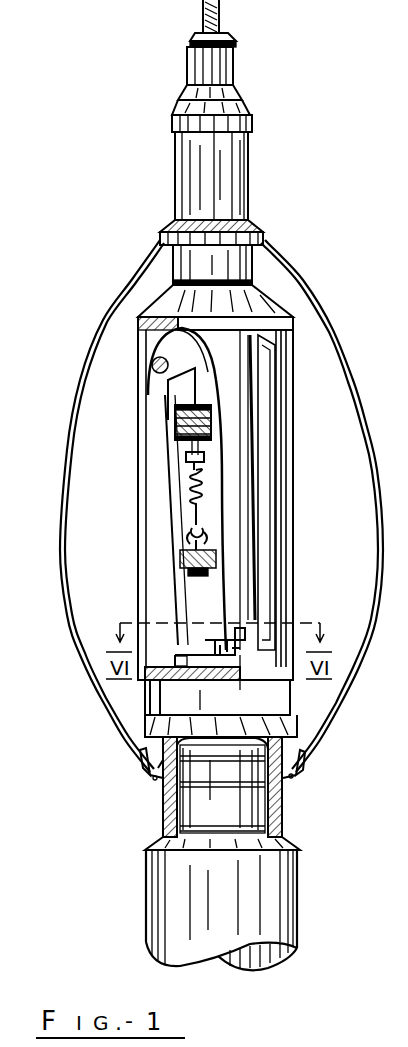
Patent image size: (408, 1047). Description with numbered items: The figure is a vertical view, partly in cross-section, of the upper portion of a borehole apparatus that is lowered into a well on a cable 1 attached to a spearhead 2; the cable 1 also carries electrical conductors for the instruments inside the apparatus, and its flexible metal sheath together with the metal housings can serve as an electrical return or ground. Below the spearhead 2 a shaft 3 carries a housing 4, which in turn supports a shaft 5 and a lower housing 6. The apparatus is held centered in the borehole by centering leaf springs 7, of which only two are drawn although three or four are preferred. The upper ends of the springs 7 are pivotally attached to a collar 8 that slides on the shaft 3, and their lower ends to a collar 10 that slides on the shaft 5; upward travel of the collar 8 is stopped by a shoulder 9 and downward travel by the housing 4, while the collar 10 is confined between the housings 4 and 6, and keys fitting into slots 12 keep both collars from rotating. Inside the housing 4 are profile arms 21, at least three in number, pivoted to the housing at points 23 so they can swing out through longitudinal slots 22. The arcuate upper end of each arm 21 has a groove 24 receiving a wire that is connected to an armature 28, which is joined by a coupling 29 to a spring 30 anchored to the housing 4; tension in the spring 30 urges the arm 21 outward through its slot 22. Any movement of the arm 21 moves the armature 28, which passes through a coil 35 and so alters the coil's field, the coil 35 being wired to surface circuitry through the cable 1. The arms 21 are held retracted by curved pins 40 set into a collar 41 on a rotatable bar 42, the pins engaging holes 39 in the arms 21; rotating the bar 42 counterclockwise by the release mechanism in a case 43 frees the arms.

The cable 1 is at (222, 8).
The spearhead 2 is at (187, 70).
The shaft 3 is at (250, 172).
The housing 4 is at (287, 346).
The shaft 5 is at (284, 820).
The housing 6 is at (298, 903).
The centering leaf springs 7 is at (73, 410).
The collar 8 is at (252, 268).
The shoulder 9 is at (253, 124).
The collar 10 is at (306, 757).
The slots 12 is at (212, 182).
The profile arms 21 is at (165, 585).
The longitudinal slots 22 is at (265, 537).
The pivot points 23 is at (152, 365).
The groove 24 is at (168, 388).
The armature 28 is at (186, 455).
The coupling 29 is at (188, 478).
The spring 30 is at (186, 508).
The coil 35 is at (175, 425).
The holes 39 is at (145, 678).
The curved pins 40 is at (217, 678).
The collar 41 is at (237, 672).
The rotatable bar 42 is at (142, 738).
The case 43 is at (170, 815).